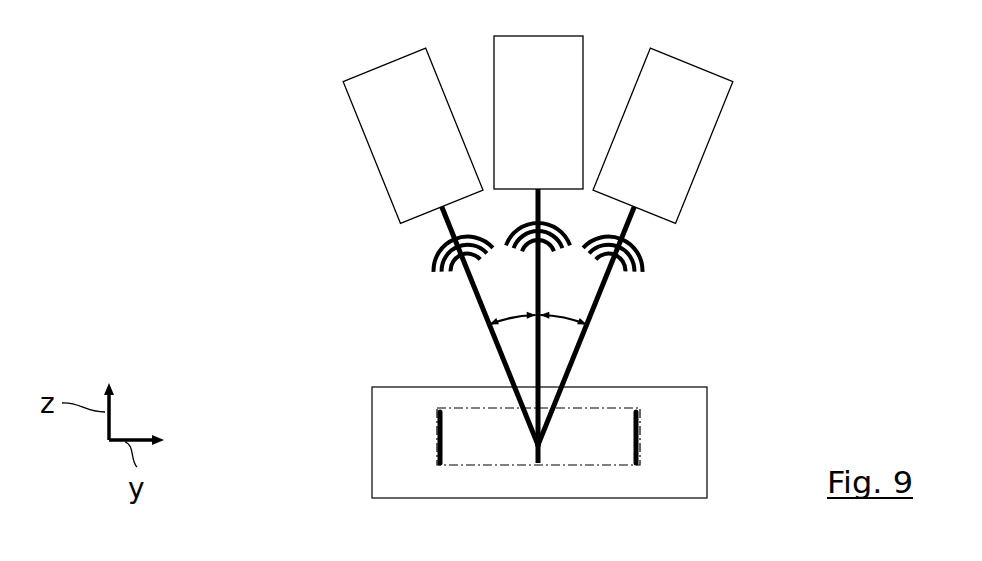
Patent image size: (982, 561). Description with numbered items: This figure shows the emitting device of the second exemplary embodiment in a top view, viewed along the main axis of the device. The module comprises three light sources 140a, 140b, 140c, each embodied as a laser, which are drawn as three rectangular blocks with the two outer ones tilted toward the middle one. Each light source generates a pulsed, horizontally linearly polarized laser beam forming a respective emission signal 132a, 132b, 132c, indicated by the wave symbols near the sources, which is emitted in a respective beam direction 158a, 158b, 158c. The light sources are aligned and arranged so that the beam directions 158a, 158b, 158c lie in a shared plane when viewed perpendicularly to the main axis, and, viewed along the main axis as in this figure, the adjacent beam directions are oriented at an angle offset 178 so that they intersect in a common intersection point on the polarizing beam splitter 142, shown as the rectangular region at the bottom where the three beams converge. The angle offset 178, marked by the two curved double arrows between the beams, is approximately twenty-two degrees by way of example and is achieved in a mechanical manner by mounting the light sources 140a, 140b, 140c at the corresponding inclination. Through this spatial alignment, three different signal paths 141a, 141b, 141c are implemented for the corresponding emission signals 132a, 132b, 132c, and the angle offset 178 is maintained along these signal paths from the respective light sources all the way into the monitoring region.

The light source 140a is at (449, 149).
The light source 140b is at (568, 124).
The light source 140c is at (703, 136).
The emission signal 132a is at (430, 245).
The emission signal 132b is at (572, 247).
The emission signal 132c is at (643, 237).
The signal path 141a is at (482, 313).
The signal path 141b is at (536, 372).
The signal path 141c is at (563, 392).
The beam direction 158a is at (476, 300).
The beam direction 158b is at (541, 357).
The beam direction 158c is at (603, 293).
The angle offset 178 is at (500, 326).
The polarizing beam splitter 142 is at (395, 443).